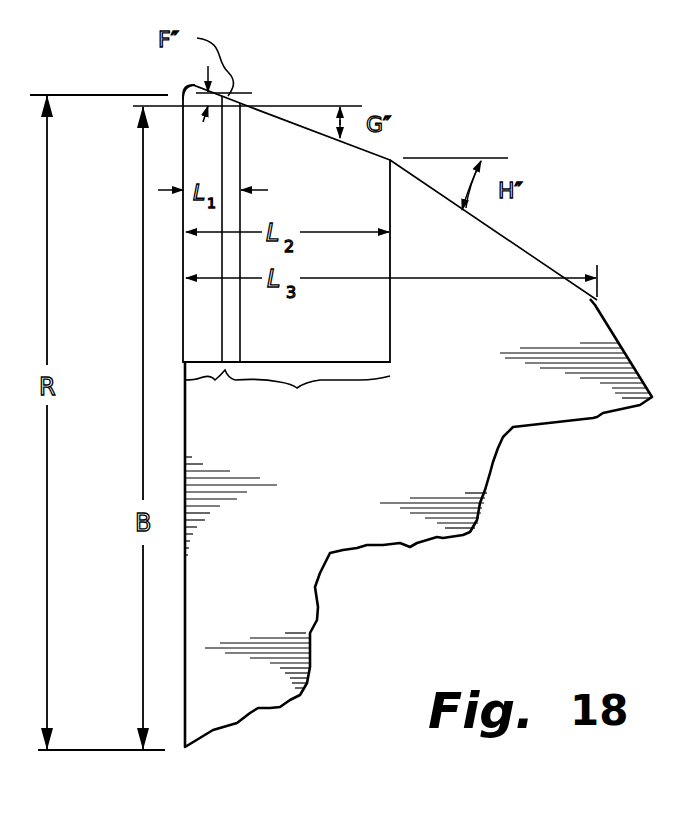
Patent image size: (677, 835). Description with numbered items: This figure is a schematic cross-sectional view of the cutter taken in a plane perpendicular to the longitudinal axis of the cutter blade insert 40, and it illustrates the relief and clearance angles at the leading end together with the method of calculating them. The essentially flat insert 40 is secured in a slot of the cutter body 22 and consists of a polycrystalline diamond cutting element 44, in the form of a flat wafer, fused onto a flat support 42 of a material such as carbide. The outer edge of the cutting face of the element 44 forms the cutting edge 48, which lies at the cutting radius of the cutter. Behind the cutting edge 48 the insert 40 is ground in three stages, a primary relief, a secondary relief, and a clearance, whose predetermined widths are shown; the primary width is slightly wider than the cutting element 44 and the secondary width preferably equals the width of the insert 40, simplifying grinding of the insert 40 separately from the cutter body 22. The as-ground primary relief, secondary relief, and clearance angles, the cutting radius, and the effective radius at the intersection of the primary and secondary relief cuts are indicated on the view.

The cutter body 22 is at (480, 450).
The cutter blade insert 40 is at (399, 333).
The flat support 42 is at (297, 388).
The polycrystalline diamond cutting element 44 is at (225, 370).
The cutting edge 48 is at (183, 94).